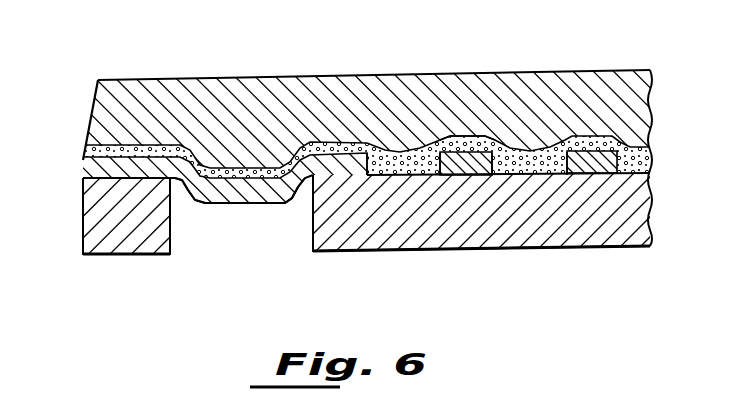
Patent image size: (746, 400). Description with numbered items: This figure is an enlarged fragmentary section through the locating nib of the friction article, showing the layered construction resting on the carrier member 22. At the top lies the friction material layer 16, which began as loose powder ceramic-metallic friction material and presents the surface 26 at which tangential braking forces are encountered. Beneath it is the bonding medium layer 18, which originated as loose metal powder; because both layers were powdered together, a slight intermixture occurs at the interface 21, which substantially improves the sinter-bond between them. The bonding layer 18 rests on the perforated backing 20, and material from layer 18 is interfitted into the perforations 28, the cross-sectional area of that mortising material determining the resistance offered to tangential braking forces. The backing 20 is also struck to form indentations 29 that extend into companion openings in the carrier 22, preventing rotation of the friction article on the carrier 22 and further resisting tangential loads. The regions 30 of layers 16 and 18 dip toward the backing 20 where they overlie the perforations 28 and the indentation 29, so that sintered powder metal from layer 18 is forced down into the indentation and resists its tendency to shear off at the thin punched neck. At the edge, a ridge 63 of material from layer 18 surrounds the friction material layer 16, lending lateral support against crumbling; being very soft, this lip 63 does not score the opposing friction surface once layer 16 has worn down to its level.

The friction material layer 16 is at (623, 82).
The bonding medium layer 18 is at (83, 170).
The perforated backing 20 is at (598, 174).
The interface 21 is at (453, 145).
The carrier member 22 is at (115, 244).
The surface 26 is at (265, 78).
The perforations 28 is at (502, 155).
The indentations 29 is at (242, 193).
The regions 30 is at (400, 148).
The ridge 63 is at (88, 118).